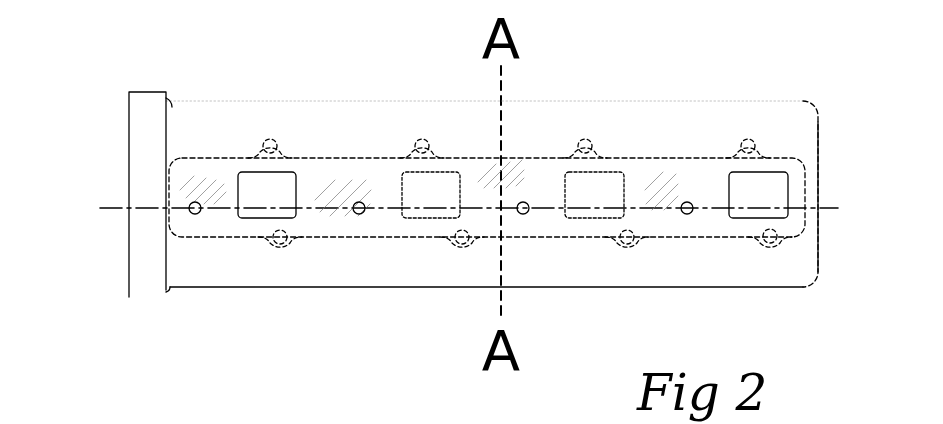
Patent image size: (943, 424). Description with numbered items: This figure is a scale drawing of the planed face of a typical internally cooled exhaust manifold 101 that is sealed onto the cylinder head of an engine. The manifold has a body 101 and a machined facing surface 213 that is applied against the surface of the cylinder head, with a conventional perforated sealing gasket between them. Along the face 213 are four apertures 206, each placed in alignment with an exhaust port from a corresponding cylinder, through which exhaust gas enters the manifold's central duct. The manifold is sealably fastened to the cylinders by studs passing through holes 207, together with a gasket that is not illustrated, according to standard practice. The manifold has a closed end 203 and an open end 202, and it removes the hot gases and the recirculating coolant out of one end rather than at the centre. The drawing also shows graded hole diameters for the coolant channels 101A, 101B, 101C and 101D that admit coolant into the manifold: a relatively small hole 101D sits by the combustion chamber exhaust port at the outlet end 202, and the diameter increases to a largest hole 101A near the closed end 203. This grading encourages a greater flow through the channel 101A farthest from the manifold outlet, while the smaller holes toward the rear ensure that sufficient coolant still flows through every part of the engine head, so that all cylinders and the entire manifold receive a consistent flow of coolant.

The exhaust manifold body 101 is at (212, 103).
The coolant channel 101A is at (694, 213).
The coolant channel 101B is at (522, 216).
The coolant channel 101C is at (358, 213).
The coolant channel 101D is at (196, 214).
The open end 202 is at (129, 282).
The closed end 203 is at (817, 132).
The aperture 206 is at (436, 184).
The hole 207 is at (273, 142).
The machined facing surface 213 is at (178, 168).